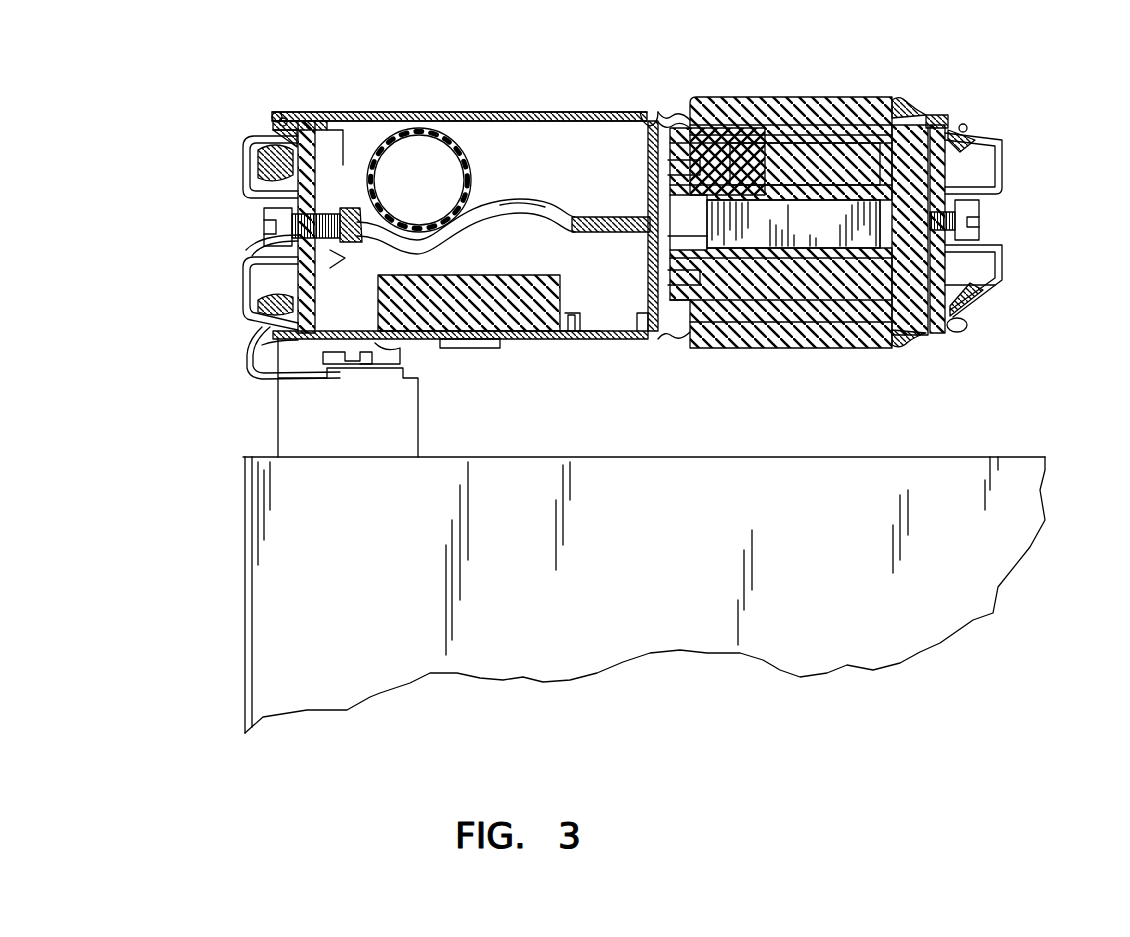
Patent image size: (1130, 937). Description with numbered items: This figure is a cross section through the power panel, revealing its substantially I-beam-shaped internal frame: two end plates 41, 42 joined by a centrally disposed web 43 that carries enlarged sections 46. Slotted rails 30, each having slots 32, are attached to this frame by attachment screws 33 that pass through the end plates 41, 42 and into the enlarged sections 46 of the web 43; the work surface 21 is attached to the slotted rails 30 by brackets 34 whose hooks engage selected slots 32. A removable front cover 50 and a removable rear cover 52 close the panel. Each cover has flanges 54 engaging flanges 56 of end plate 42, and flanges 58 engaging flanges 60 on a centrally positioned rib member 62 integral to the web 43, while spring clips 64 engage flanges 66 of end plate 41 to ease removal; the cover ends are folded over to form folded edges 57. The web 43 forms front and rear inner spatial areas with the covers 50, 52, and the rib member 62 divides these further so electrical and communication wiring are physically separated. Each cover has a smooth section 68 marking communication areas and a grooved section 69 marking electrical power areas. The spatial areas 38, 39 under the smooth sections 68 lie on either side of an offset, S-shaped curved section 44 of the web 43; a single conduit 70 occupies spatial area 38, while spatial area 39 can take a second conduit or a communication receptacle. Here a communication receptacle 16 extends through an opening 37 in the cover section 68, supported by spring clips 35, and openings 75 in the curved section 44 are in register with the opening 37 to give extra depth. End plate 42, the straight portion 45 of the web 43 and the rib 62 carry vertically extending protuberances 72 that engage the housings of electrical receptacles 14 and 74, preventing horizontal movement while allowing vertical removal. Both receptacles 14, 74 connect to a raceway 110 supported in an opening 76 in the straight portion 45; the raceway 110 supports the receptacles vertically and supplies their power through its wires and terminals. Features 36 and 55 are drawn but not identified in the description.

The electrical receptacle 14 is at (745, 280).
The communication receptacle 16 is at (473, 273).
The work surface 21 is at (262, 658).
The slotted rail 30 is at (242, 266).
The slot 32 is at (263, 135).
The attachment screw 33 is at (265, 213).
The bracket 34 is at (290, 338).
The spring clip 35 is at (574, 316).
The side wall 36 is at (243, 172).
The opening 37 is at (580, 340).
The spatial area 38 is at (490, 150).
The spatial area 39 is at (583, 340).
The end plate 41 is at (332, 258).
The end plate 42 is at (945, 172).
The web 43 is at (624, 210).
The curved section 44 is at (498, 198).
The straight portion 45 is at (930, 260).
The enlarged section 46 is at (343, 160).
The front cover 50 is at (323, 330).
The rear cover 52 is at (277, 118).
The flange 54 is at (907, 140).
The lip 55 is at (952, 120).
The flange 56 is at (963, 113).
The folded edge 57 is at (270, 117).
The flange 58 is at (620, 122).
The flange 60 is at (650, 128).
The rib member 62 is at (703, 210).
The spring clip 64 is at (350, 140).
The flange 66 is at (240, 196).
The smooth section 68 is at (443, 112).
The grooved section 69 is at (668, 112).
The conduit 70 is at (384, 140).
The protuberance 72 is at (662, 150).
The electrical receptacle 74 is at (825, 98).
The opening 75 is at (557, 207).
The opening 76 is at (683, 237).
The raceway 110 is at (797, 240).